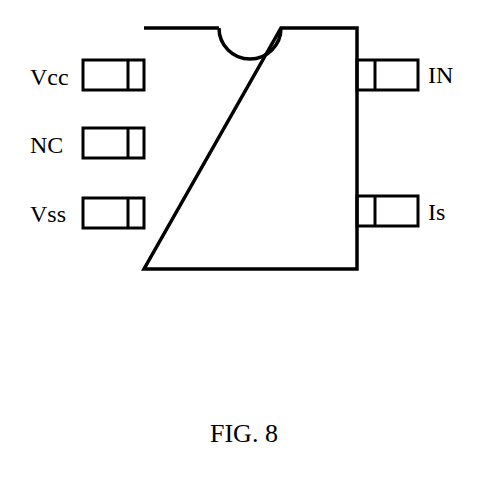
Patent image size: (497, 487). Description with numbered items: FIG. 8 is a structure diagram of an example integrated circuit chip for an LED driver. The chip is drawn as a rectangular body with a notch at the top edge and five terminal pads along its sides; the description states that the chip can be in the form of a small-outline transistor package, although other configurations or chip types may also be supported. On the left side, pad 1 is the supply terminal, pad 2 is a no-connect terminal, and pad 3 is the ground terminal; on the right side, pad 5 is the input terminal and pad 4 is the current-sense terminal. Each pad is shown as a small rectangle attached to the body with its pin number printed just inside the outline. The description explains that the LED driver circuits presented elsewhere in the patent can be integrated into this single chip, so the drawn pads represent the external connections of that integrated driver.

The pin 1 (Vcc) 1 is at (123, 75).
The pin 2 (NC) 2 is at (123, 143).
The pin 3 (Vss) 3 is at (123, 213).
The pin 4 (Is) 4 is at (375, 211).
The pin 5 (IN) 5 is at (375, 75).